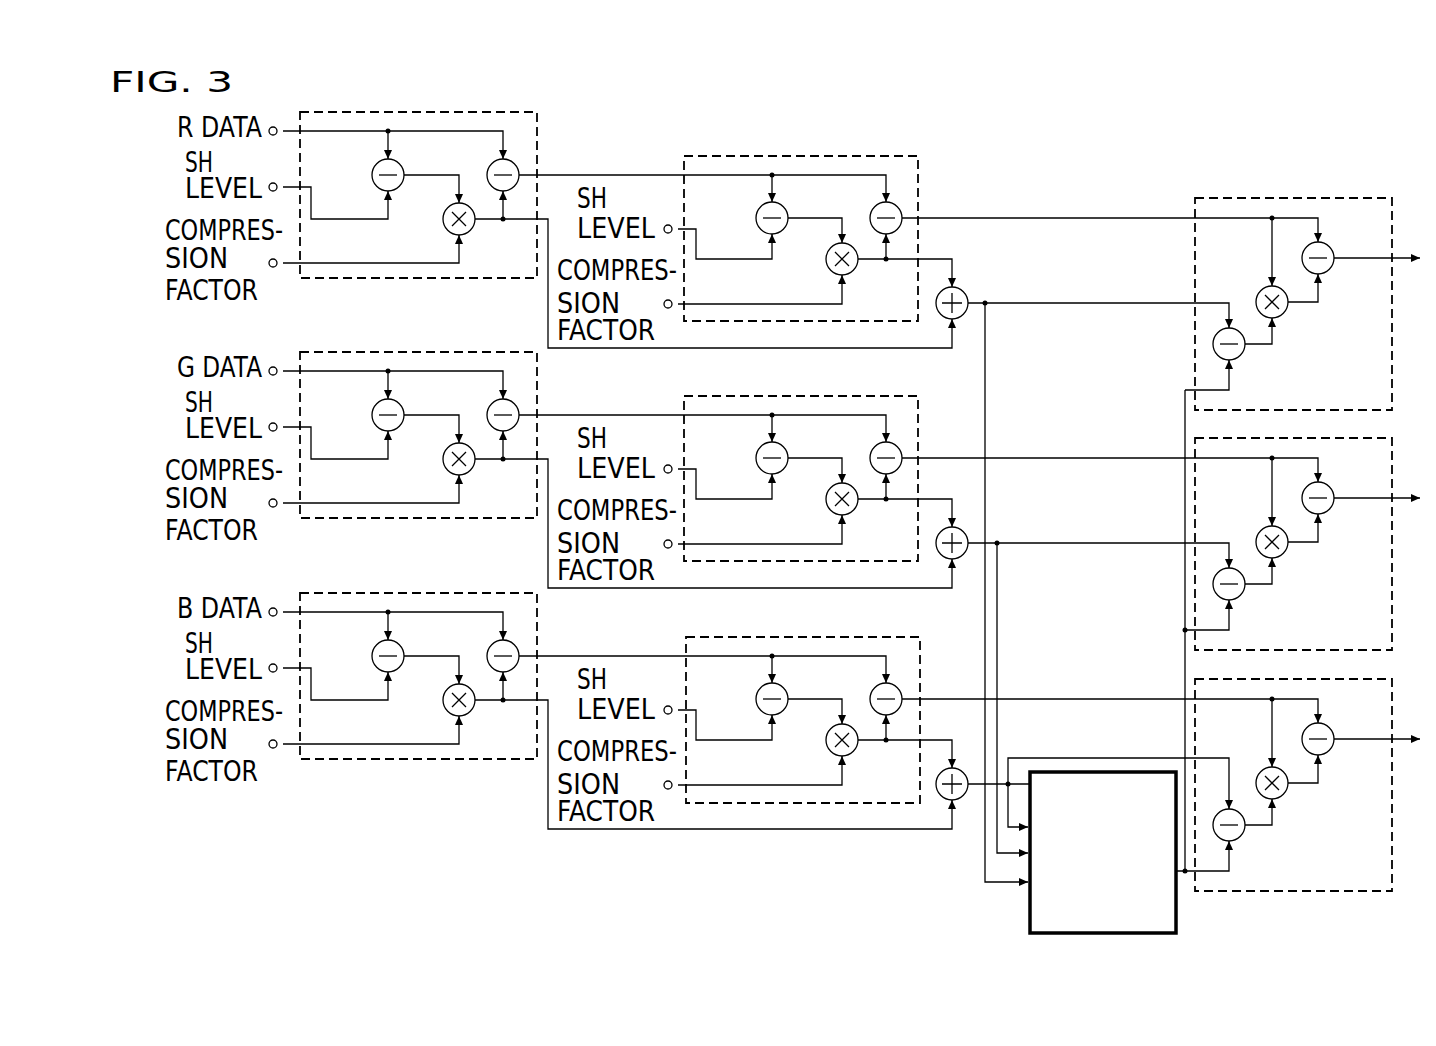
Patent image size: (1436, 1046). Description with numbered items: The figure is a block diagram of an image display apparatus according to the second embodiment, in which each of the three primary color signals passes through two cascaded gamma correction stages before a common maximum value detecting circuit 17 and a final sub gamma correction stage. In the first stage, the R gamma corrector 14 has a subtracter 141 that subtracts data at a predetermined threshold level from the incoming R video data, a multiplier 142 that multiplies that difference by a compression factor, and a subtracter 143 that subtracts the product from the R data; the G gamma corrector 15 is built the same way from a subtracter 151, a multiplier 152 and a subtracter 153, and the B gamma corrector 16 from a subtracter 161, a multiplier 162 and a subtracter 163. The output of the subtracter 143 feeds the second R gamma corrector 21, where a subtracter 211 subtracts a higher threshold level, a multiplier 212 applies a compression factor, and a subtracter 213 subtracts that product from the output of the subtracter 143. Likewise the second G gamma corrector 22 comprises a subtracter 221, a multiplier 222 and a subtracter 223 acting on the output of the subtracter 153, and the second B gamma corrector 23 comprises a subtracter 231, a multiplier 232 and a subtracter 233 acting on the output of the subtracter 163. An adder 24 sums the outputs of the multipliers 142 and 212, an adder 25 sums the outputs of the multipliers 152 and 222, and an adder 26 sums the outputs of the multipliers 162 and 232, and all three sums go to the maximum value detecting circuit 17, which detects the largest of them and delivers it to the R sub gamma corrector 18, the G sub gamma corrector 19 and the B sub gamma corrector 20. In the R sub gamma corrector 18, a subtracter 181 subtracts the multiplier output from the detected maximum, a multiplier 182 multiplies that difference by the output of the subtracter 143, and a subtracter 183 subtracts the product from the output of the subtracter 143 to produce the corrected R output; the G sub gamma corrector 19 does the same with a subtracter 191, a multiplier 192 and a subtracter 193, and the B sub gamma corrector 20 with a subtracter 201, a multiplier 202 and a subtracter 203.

The R gamma corrector 14 is at (537, 139).
The G gamma corrector 15 is at (537, 379).
The B gamma corrector 16 is at (537, 620).
The maximum value detecting circuit 17 is at (1030, 902).
The R sub gamma corrector 18 is at (1392, 340).
The G sub gamma corrector 19 is at (1392, 580).
The B sub gamma corrector 20 is at (1392, 822).
The second R gamma corrector 21 is at (918, 185).
The second G gamma corrector 22 is at (918, 418).
The second B gamma corrector 23 is at (920, 658).
The adder 24 is at (966, 291).
The adder 25 is at (958, 527).
The adder 26 is at (963, 763).
The subtracter 141 is at (378, 164).
The multiplier 142 is at (444, 229).
The subtracter 143 is at (492, 164).
The subtracter 151 is at (378, 404).
The multiplier 152 is at (444, 469).
The subtracter 153 is at (492, 404).
The subtracter 161 is at (378, 645).
The multiplier 162 is at (444, 710).
The subtracter 163 is at (492, 645).
The subtracter 181 is at (1241, 356).
The multiplier 182 is at (1285, 315).
The subtracter 183 is at (1331, 271).
The subtracter 191 is at (1241, 596).
The multiplier 192 is at (1285, 555).
The subtracter 193 is at (1331, 511).
The subtracter 201 is at (1241, 837).
The multiplier 202 is at (1285, 796).
The subtracter 203 is at (1331, 752).
The subtracter 211 is at (762, 207).
The multiplier 212 is at (827, 271).
The subtracter 213 is at (875, 207).
The subtracter 221 is at (762, 447).
The multiplier 222 is at (827, 511).
The subtracter 223 is at (875, 447).
The subtracter 231 is at (762, 688).
The multiplier 232 is at (827, 752).
The subtracter 233 is at (875, 688).